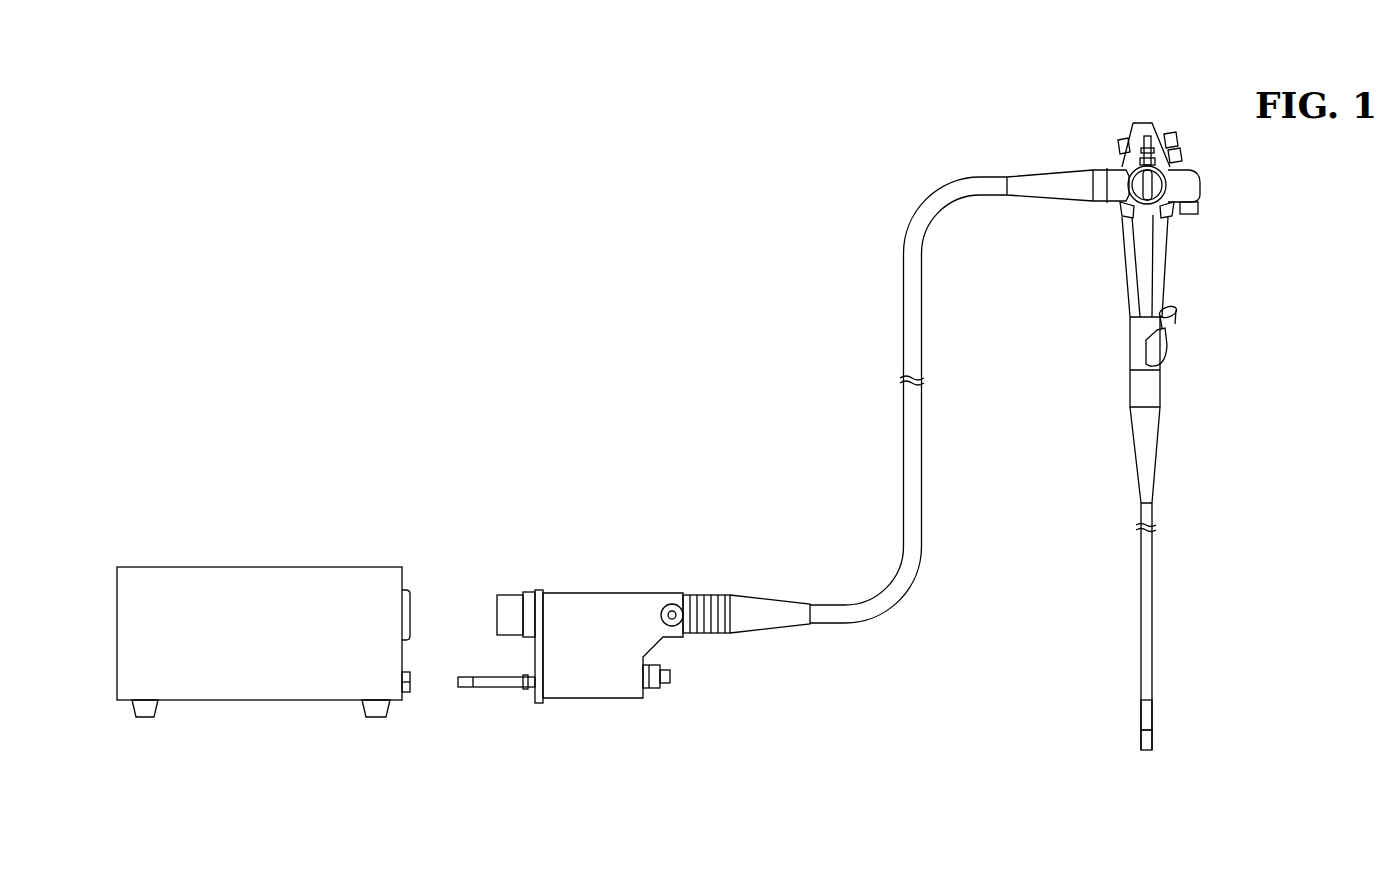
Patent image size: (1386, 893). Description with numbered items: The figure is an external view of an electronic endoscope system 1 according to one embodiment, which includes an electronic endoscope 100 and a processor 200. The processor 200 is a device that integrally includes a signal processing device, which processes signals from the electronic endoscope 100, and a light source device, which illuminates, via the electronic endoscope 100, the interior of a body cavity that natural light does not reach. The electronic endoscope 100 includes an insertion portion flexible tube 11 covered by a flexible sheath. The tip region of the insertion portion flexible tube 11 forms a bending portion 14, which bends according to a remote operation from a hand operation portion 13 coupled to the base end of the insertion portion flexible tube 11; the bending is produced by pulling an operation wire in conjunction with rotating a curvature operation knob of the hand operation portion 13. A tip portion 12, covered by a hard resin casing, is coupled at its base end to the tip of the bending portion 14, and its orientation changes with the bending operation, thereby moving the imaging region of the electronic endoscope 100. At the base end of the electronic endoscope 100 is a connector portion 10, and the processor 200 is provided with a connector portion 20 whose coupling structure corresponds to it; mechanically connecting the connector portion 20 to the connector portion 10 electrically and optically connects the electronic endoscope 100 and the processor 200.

The electronic endoscope system 1 is at (460, 261).
The connector portion 10 is at (616, 588).
The insertion portion flexible tube 11 is at (1150, 605).
The tip portion 12 is at (1144, 740).
The hand operation portion 13 is at (1178, 148).
The bending portion 14 is at (1150, 711).
The connector portion 20 is at (421, 645).
The electronic endoscope 100 is at (917, 176).
The processor 200 is at (234, 563).